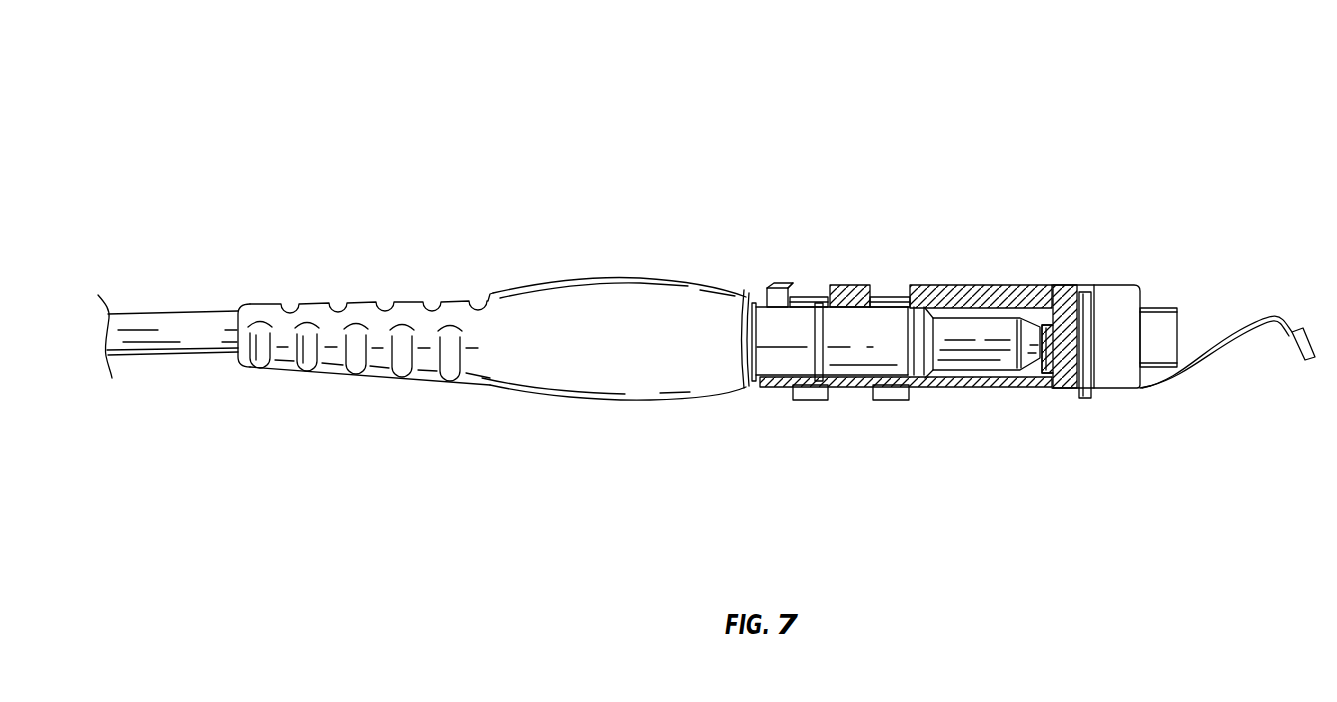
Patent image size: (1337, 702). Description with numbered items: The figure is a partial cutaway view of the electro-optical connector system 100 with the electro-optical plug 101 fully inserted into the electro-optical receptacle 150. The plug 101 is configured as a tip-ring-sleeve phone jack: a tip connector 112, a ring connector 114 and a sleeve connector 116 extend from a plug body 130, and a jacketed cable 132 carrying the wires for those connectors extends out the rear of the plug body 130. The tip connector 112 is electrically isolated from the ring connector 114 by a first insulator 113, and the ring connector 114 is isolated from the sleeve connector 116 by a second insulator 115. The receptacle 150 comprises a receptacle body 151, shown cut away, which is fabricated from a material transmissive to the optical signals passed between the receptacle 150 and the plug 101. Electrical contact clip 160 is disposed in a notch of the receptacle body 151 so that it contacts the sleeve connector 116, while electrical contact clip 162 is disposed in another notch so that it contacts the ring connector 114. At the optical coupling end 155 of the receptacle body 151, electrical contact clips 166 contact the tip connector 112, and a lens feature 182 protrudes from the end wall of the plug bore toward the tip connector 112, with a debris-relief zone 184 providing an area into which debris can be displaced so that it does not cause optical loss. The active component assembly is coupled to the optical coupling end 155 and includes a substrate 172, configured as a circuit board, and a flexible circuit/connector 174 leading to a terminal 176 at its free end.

The electro-optical connector system 100 is at (590, 224).
The electro-optical plug 101 is at (470, 275).
The tip connector 112 is at (968, 352).
The first insulator 113 is at (913, 288).
The ring connector 114 is at (857, 357).
The second insulator 115 is at (832, 290).
The sleeve connector 116 is at (763, 390).
The plug body 130 is at (595, 400).
The cable 132 is at (172, 313).
The electro-optical receptacle 150 is at (1096, 116).
The receptacle body 151 is at (739, 271).
The optical coupling end 155 is at (1161, 410).
The electrical contact clip 160 is at (807, 290).
The electrical contact clip 162 is at (885, 290).
The electrical contact clips 166 is at (1157, 308).
The substrate 172 is at (1084, 392).
The flexible circuit/connector 174 is at (1253, 318).
The wire terminal 176 is at (1293, 352).
The lens feature 182 is at (1072, 295).
The debris-relief zone 184 is at (1042, 375).